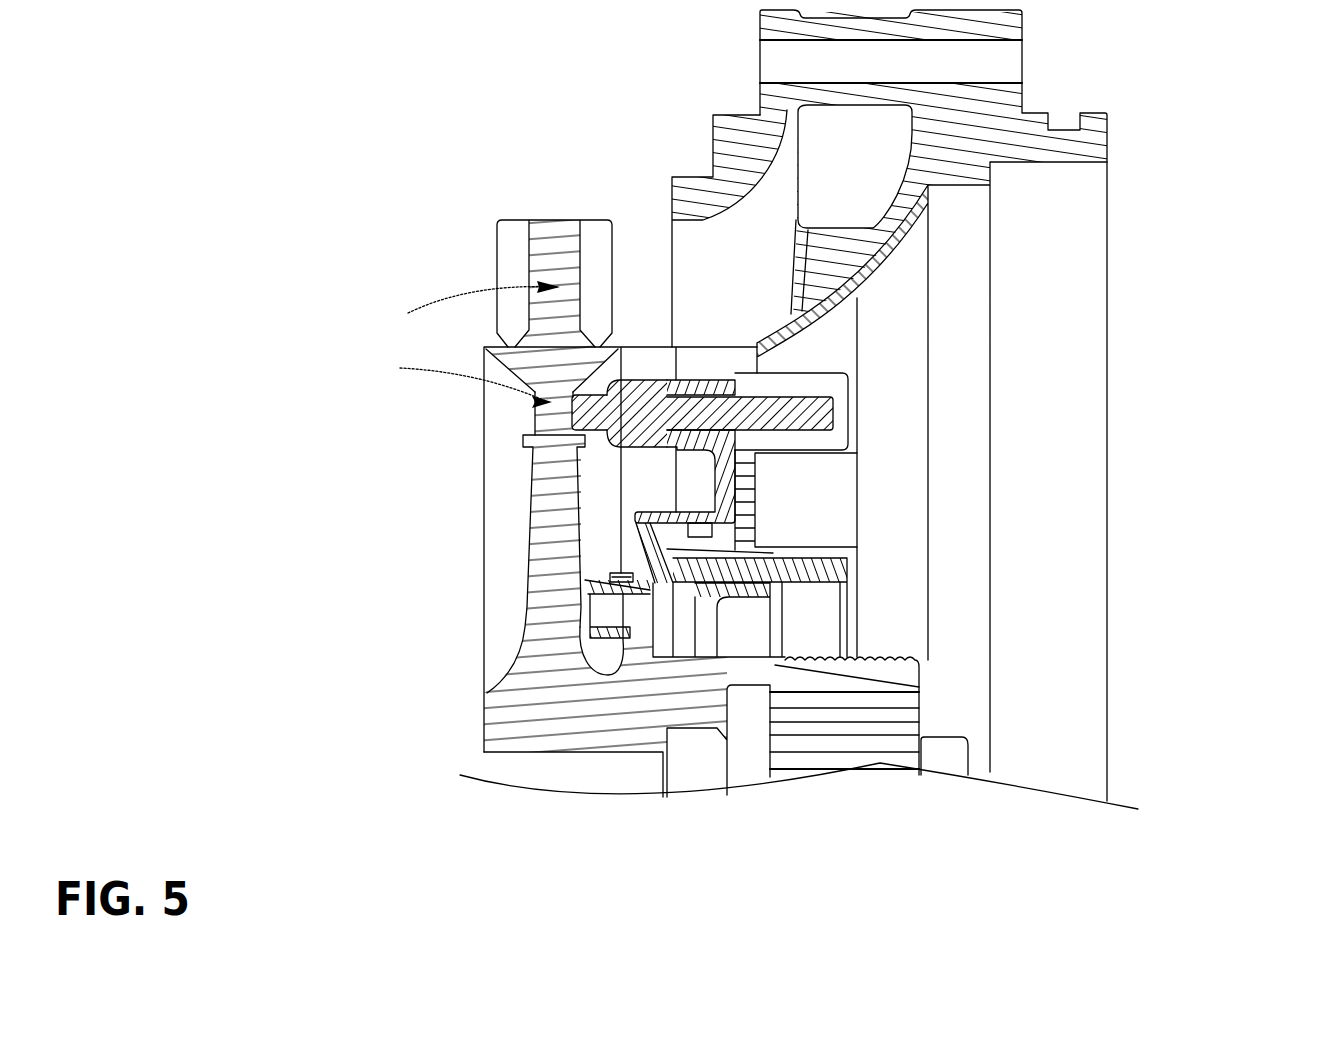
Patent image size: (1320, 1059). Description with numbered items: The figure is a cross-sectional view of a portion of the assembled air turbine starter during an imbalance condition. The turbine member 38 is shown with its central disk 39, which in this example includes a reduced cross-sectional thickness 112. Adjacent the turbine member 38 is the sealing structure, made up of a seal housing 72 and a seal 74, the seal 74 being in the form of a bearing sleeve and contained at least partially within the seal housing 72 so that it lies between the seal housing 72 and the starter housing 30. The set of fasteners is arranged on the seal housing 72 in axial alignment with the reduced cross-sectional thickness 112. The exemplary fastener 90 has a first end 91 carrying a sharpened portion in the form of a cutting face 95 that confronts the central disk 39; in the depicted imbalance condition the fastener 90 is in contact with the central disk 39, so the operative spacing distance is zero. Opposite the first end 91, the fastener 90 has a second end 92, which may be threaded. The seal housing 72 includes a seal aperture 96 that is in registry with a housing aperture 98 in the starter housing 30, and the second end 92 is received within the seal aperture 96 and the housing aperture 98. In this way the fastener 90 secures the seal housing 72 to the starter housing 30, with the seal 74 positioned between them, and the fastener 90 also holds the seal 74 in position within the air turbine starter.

The starter housing 30 is at (1093, 137).
The turbine member 38 is at (467, 303).
The central disk 39 is at (555, 248).
The reduced cross-sectional thickness 112 is at (453, 380).
The cutting face 95 is at (571, 406).
The first end 91 is at (597, 418).
The fastener 90 is at (693, 408).
The second end 92 is at (793, 413).
The housing aperture 98 is at (780, 392).
The seal aperture 96 is at (833, 462).
The seal housing 72 is at (730, 490).
The seal 74 is at (807, 573).